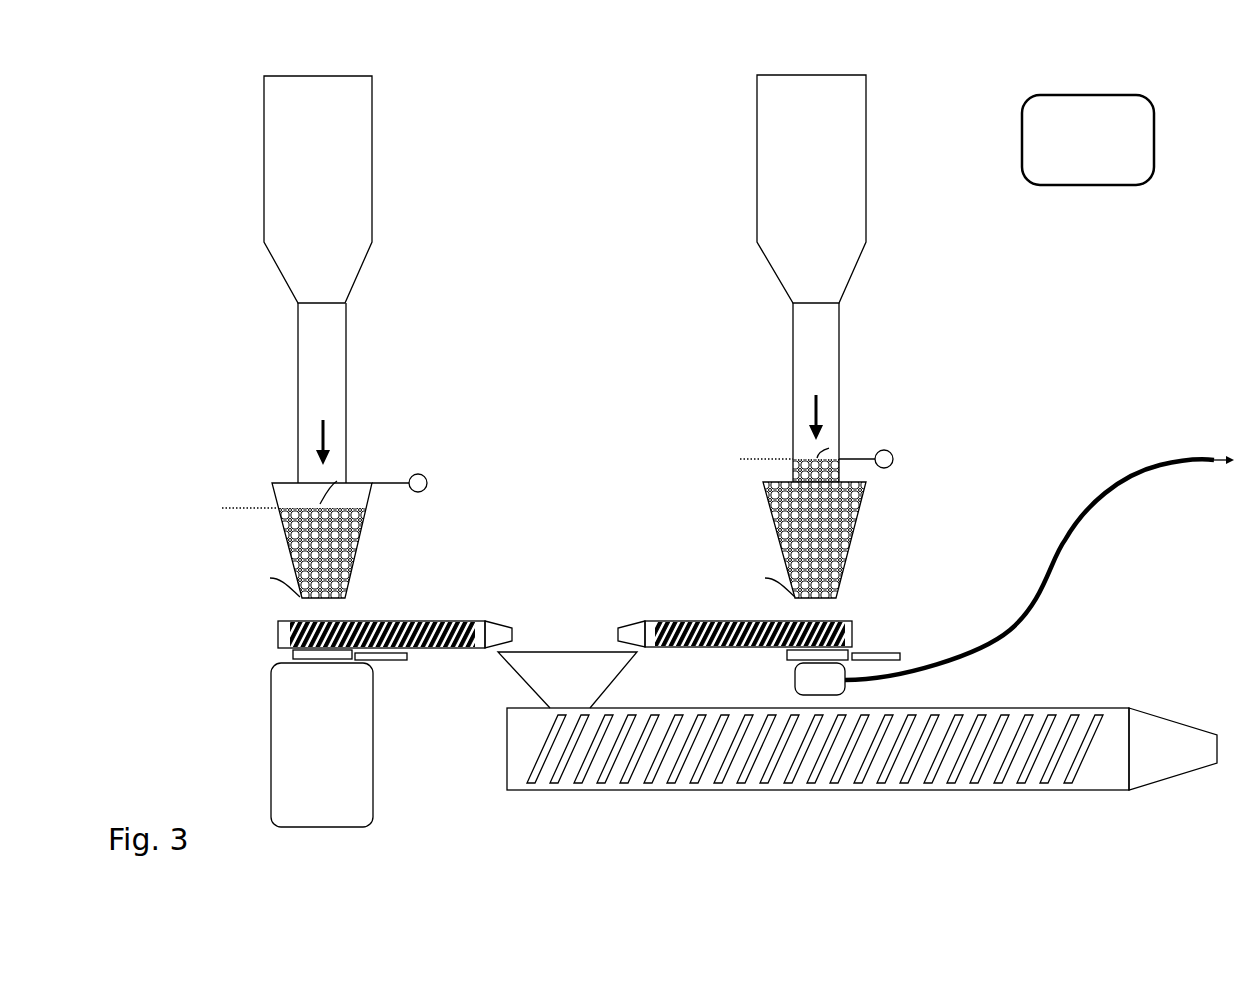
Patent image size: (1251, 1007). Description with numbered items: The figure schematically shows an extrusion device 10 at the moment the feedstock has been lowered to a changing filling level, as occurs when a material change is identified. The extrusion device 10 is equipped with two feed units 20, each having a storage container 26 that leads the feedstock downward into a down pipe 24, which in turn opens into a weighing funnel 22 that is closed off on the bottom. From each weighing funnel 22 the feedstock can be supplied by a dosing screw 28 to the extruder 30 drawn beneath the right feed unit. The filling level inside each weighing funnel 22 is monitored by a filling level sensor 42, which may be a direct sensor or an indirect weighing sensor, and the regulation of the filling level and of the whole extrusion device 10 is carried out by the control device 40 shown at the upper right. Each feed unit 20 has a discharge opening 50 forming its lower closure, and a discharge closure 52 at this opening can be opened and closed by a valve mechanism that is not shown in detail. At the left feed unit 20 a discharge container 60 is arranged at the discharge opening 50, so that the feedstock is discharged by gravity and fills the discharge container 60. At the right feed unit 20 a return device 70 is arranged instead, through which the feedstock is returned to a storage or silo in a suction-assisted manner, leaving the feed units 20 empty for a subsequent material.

The extrusion device 10 is at (158, 112).
The feed unit 20 is at (422, 190).
The weighing funnel 22 is at (346, 595).
The down pipe 24 is at (346, 340).
The storage container 26 is at (372, 92).
The dosing screw 28 is at (425, 618).
The extruder 30 is at (1043, 708).
The control device 40 is at (1078, 95).
The filling level sensor 42 is at (419, 474).
The discharge opening 50 is at (274, 655).
The discharge closure 52 is at (370, 661).
The discharge container 60 is at (271, 720).
The return device 70 is at (1123, 480).